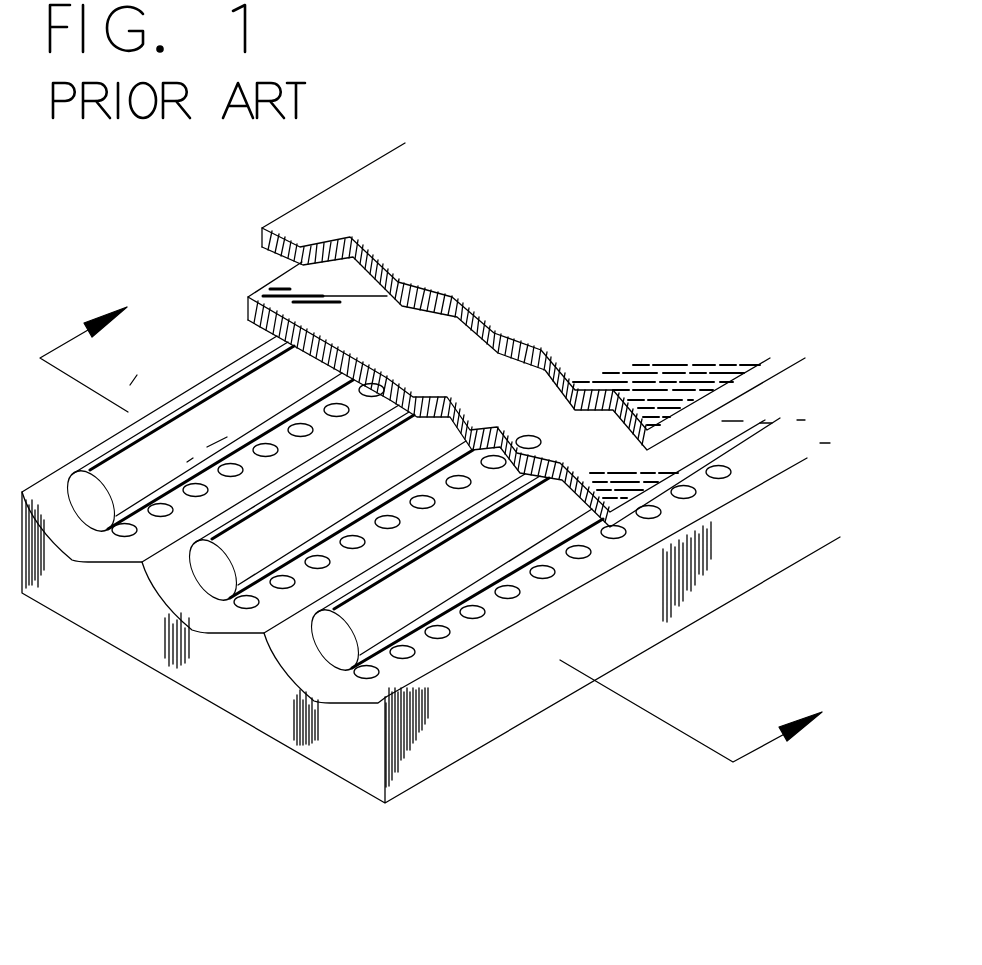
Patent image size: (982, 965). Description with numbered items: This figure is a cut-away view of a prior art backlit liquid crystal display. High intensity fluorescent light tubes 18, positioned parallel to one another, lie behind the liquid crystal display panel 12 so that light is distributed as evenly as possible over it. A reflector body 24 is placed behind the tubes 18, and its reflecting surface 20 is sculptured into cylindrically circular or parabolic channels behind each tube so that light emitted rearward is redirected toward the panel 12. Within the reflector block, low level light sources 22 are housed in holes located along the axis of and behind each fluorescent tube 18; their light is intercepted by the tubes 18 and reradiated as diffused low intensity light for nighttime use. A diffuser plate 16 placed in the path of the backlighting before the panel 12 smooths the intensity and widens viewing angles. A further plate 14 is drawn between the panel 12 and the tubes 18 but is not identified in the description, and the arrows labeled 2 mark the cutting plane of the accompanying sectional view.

The section line 2- 2 is at (436, 533).
The liquid crystal display panel 12 is at (292, 226).
The corrugated intermediate plate 14 is at (480, 397).
The diffuser plate 16 is at (725, 455).
The high intensity fluorescent light tubes 18 is at (243, 403).
The reflecting surface 20 is at (183, 597).
The low level light sources 22 is at (413, 653).
The reflector body 24 is at (430, 757).